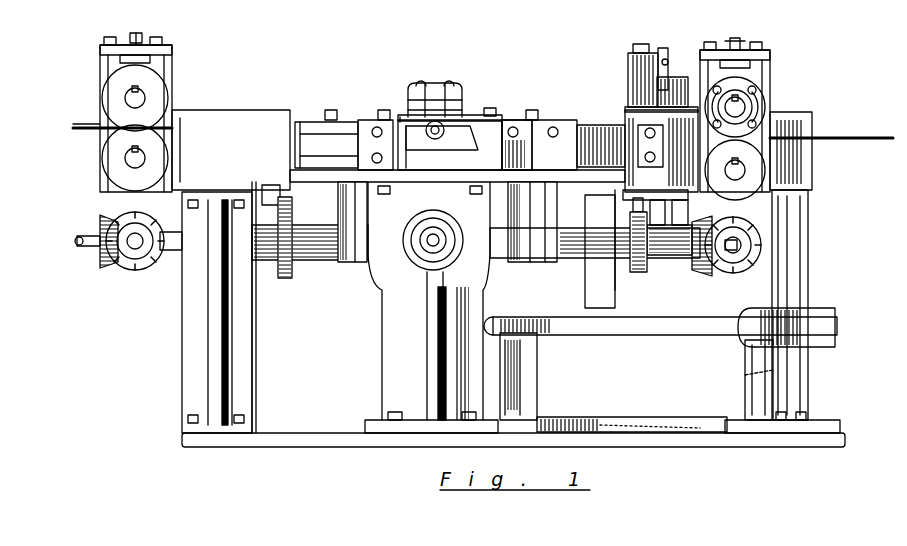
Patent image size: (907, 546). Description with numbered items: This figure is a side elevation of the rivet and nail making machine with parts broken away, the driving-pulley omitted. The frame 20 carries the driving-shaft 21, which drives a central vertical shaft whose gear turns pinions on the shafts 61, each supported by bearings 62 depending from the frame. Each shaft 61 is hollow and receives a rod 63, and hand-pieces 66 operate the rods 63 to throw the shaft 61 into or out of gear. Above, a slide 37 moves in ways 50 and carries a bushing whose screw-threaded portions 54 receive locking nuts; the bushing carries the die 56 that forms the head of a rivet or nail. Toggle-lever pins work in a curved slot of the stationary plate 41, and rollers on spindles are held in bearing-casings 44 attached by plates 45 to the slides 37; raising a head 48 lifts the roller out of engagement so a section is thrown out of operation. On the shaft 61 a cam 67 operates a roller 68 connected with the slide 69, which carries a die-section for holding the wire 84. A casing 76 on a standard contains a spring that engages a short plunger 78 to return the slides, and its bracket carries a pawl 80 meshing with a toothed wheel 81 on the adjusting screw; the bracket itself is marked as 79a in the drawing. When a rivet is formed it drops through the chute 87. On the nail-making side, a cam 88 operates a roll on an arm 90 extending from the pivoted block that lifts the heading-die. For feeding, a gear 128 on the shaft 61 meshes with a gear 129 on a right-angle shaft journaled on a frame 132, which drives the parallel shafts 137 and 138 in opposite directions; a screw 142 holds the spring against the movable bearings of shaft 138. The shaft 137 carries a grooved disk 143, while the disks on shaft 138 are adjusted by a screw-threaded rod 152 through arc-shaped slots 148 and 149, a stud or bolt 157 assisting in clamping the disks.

The frame 20 is at (281, 114).
The driving-shaft 21 is at (646, 336).
The slide 37 is at (470, 132).
The stationary plate 41 is at (358, 120).
The bearing-casing 44 is at (464, 108).
The plate 45 is at (399, 116).
The head 48 is at (458, 98).
The ways 50 is at (506, 126).
The screw-threaded portions 54 is at (430, 138).
The die 56 is at (442, 137).
The shaft 61 is at (412, 245).
The bearings 62 is at (353, 266).
The rod 63 is at (433, 250).
The hand-pieces 66 is at (85, 247).
The cam 67 is at (646, 270).
The roller 68 is at (632, 210).
The slide 69 is at (622, 196).
The casing 76 is at (636, 80).
The plunger 78 is at (630, 114).
The pin 79a is at (668, 62).
The pawl 80 is at (668, 52).
The toothed wheel 81 is at (641, 44).
The wire 84 is at (870, 137).
The chute 87 is at (607, 296).
The cam 88 is at (291, 272).
The arm 90 is at (306, 186).
The gear 128 is at (108, 270).
The gear 129 is at (143, 270).
The frame 132 is at (740, 226).
The shaft 137 is at (132, 163).
The shaft 138 is at (126, 98).
The screw 142 is at (742, 31).
The disk 143 is at (122, 158).
The arc-shaped slot 148 is at (704, 112).
The arc-shaped slot 149 is at (757, 98).
The screw-threaded rod 152 is at (680, 138).
The stud or bolt 157 is at (754, 92).